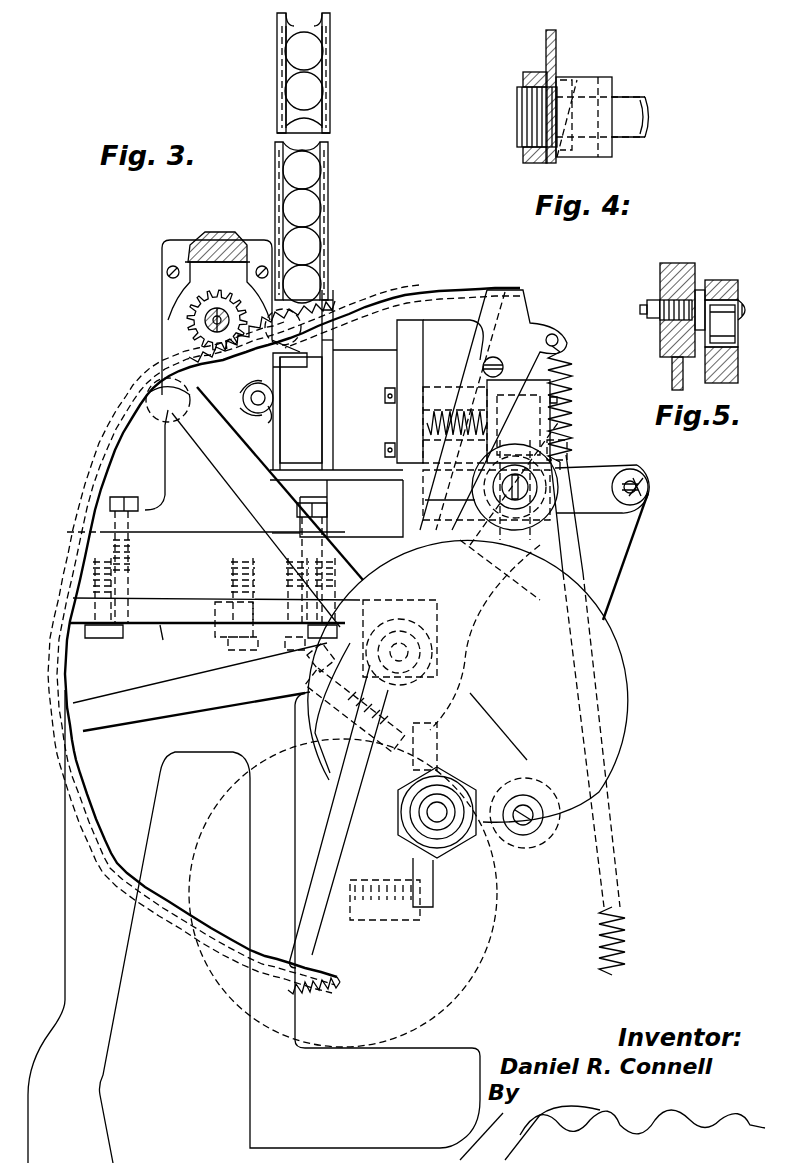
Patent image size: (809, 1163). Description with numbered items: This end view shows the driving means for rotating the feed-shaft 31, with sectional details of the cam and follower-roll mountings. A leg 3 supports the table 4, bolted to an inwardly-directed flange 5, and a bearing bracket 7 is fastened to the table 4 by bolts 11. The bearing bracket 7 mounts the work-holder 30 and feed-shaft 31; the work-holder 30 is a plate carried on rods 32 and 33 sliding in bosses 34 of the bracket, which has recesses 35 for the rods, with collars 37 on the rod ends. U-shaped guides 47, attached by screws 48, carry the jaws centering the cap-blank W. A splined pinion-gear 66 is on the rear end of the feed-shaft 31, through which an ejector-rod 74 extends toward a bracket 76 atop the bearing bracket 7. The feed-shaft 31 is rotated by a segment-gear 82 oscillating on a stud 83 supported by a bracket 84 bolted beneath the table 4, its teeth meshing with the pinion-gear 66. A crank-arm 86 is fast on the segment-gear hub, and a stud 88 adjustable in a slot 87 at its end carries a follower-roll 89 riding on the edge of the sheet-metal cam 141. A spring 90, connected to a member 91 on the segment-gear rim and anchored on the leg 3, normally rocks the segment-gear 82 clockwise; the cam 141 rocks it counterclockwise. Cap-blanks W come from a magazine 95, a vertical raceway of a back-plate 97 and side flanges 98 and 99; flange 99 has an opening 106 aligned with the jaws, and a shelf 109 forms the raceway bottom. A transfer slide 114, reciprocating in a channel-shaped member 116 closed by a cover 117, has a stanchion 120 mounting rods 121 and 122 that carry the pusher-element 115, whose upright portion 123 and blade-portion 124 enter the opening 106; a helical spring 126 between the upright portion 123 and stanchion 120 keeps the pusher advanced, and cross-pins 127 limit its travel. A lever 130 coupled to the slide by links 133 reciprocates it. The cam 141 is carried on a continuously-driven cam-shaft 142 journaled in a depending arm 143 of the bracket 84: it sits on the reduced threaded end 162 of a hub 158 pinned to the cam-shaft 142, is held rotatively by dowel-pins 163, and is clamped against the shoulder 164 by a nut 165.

In FIG. 3, the leg 3 is at (65, 925).
In FIG. 3, the table 4 is at (192, 547).
In FIG. 3, the inwardly-directed flange 5 is at (594, 418).
In FIG. 3, the bearing bracket 7 is at (178, 462).
In FIG. 3, the bolts 11 is at (122, 500).
In FIG. 3, the work-holder 30 is at (172, 242).
In FIG. 3, the feed-shaft 31 is at (203, 320).
In FIG. 3, the rod 32 is at (266, 402).
In FIG. 3, the rod 33 is at (158, 405).
In FIG. 3, the bosses 34 is at (270, 413).
In FIG. 3, the recesses 35 is at (242, 398).
In FIG. 3, the collars 37 is at (162, 388).
In FIG. 3, the U-shaped guides 47 is at (166, 268).
In FIG. 3, the screws 48 is at (165, 275).
In FIG. 3, the splined pinion-gear 66 is at (207, 308).
In FIG. 3, the ejector-rod 74 is at (222, 316).
In FIG. 3, the bracket 76 is at (222, 246).
In FIG. 3, the segment-gear 82 is at (118, 455).
In FIG. 3, the stud 83 is at (423, 653).
In FIG. 3, the bracket 84 is at (392, 597).
In FIG. 3, the crank-arm 86 is at (560, 598).
In FIG. 5, the crank-arm 86 is at (740, 378).
In FIG. 3, the slot 87 is at (492, 550).
In FIG. 5, the slot 87 is at (725, 342).
In FIG. 3, the stud 88 is at (510, 455).
In FIG. 5, the stud 88 is at (672, 300).
In FIG. 3, the follower-roll 89 is at (540, 530).
In FIG. 5, the follower-roll 89 is at (665, 352).
In FIG. 3, the spring 90 is at (626, 912).
In FIG. 3, the member 91 is at (543, 317).
In FIG. 3, the magazine 95 is at (329, 158).
In FIG. 3, the back-plate 97 is at (312, 32).
In FIG. 3, the side flange 98 is at (279, 82).
In FIG. 3, the side flange 99 is at (326, 82).
In FIG. 3, the slot or opening 106 is at (330, 300).
In FIG. 3, the ledge or shelf 109 is at (300, 342).
In FIG. 3, the transfer slide 114 is at (407, 493).
In FIG. 3, the pusher-element 115 is at (428, 342).
In FIG. 3, the channel-shaped member 116 is at (372, 530).
In FIG. 3, the cover 117 is at (358, 480).
In FIG. 3, the stanchion 120 is at (522, 390).
In FIG. 3, the rod 121 is at (448, 393).
In FIG. 3, the rod 122 is at (438, 460).
In FIG. 3, the upright portion 123 is at (400, 378).
In FIG. 3, the blade-portion 124 is at (398, 355).
In FIG. 3, the helical spring 126 is at (428, 419).
In FIG. 3, the cross-pins 127 is at (385, 397).
In FIG. 3, the lever 130 is at (607, 583).
In FIG. 3, the links 133 is at (640, 505).
In FIG. 3, the cam 141 is at (617, 703).
In FIG. 4, the cam 141 is at (546, 43).
In FIG. 5, the cam 141 is at (672, 378).
In FIG. 3, the cam-shaft 142 is at (445, 808).
In FIG. 4, the cam-shaft 142 is at (648, 110).
In FIG. 3, the depending arm 143 is at (376, 920).
In FIG. 4, the hub 158 is at (612, 152).
In FIG. 4, the reduced threaded end 162 is at (520, 125).
In FIG. 4, the dowel-pins 163 is at (572, 103).
In FIG. 4, the shoulder 164 is at (547, 103).
In FIG. 4, the nut 165 is at (533, 153).
In FIG. 3, the cap-blank W is at (308, 221).